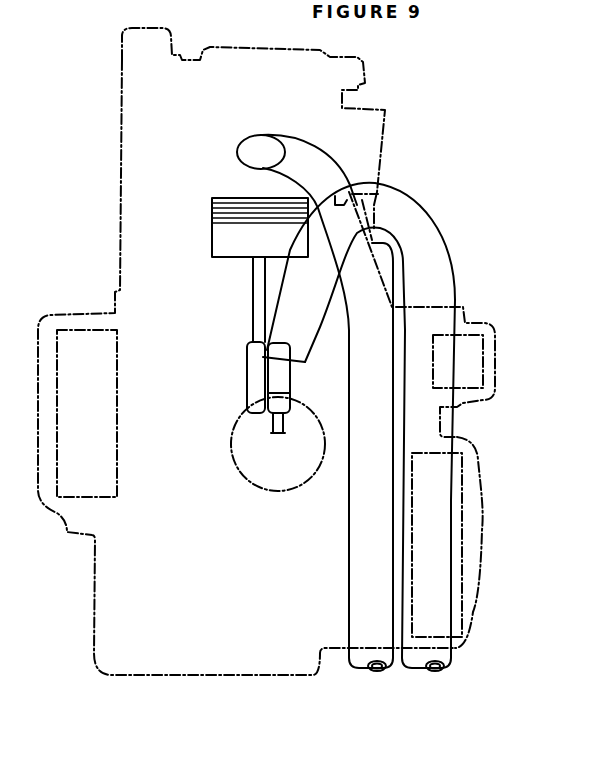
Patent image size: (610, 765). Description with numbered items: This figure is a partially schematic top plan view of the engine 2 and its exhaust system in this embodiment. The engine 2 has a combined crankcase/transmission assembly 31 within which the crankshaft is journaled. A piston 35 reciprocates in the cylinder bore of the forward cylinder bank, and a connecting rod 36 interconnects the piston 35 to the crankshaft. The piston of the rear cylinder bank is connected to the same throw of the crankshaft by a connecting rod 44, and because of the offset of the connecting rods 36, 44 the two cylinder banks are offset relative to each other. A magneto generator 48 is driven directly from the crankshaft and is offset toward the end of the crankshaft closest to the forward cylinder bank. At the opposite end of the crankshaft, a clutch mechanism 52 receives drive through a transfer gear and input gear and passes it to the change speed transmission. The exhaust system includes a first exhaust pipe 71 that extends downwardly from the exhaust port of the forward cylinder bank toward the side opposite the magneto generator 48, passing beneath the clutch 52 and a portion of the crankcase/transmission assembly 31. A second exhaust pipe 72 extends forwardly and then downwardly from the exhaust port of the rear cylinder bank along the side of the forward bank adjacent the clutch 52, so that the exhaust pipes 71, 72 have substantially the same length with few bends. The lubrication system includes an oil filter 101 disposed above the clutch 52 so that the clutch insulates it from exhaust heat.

The engine 2 is at (428, 164).
The piston 35 is at (212, 230).
The connecting rod 36 is at (253, 300).
The connecting rod 44 is at (292, 383).
The magneto generator 48 is at (73, 330).
The first exhaust pipe 71 is at (445, 238).
The exhaust pipe 72 is at (388, 322).
The oil filter 101 is at (485, 348).
The crankcase/transmission assembly 31 is at (478, 466).
The clutch mechanism 52 is at (462, 557).